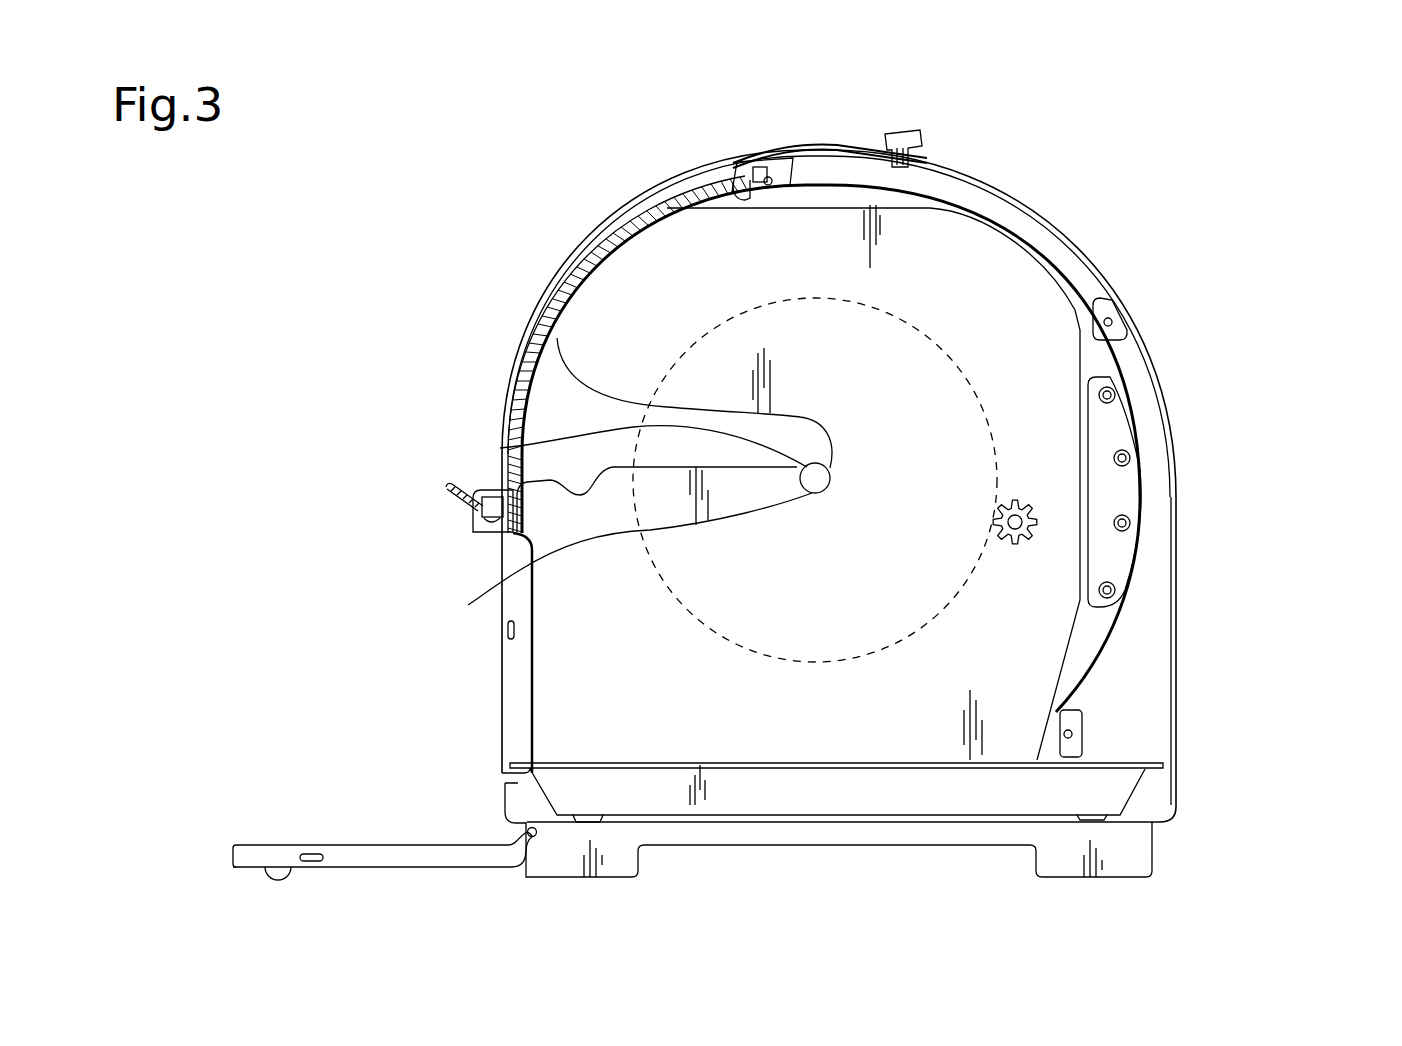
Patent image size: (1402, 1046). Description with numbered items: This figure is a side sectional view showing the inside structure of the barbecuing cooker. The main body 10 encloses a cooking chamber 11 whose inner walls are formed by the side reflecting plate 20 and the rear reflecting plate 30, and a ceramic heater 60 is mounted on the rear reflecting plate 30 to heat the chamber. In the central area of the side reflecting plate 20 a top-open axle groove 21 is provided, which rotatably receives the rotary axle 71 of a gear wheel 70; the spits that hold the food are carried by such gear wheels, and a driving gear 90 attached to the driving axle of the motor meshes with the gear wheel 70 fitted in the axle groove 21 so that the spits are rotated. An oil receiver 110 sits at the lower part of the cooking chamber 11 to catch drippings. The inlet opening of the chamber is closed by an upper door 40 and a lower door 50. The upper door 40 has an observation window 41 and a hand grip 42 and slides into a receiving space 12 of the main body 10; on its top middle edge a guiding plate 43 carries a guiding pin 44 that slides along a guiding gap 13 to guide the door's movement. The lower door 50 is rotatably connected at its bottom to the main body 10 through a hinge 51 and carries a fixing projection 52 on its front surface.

The main body 10 is at (1180, 701).
The cooking chamber 11 is at (1002, 304).
The receiving space 12 is at (988, 204).
The guiding gap 13 is at (962, 172).
The side reflecting plate 20 is at (945, 690).
The axle groove 21 is at (500, 448).
The rear reflecting plate 30 is at (1150, 493).
The upper door 40 is at (579, 269).
The observation window 41 is at (547, 338).
The hand grip 42 is at (450, 494).
The guiding plate 43 is at (822, 146).
The guiding pin 44 is at (912, 132).
The lower door 50 is at (384, 845).
The hinge 51 is at (503, 800).
The fixing projection 52 is at (284, 855).
The ceramic heater 60 is at (1128, 457).
The gear wheel 70 is at (692, 615).
The rotary axle 71 is at (468, 605).
The driving gear 90 is at (1034, 541).
The oil receiver 110 is at (820, 795).